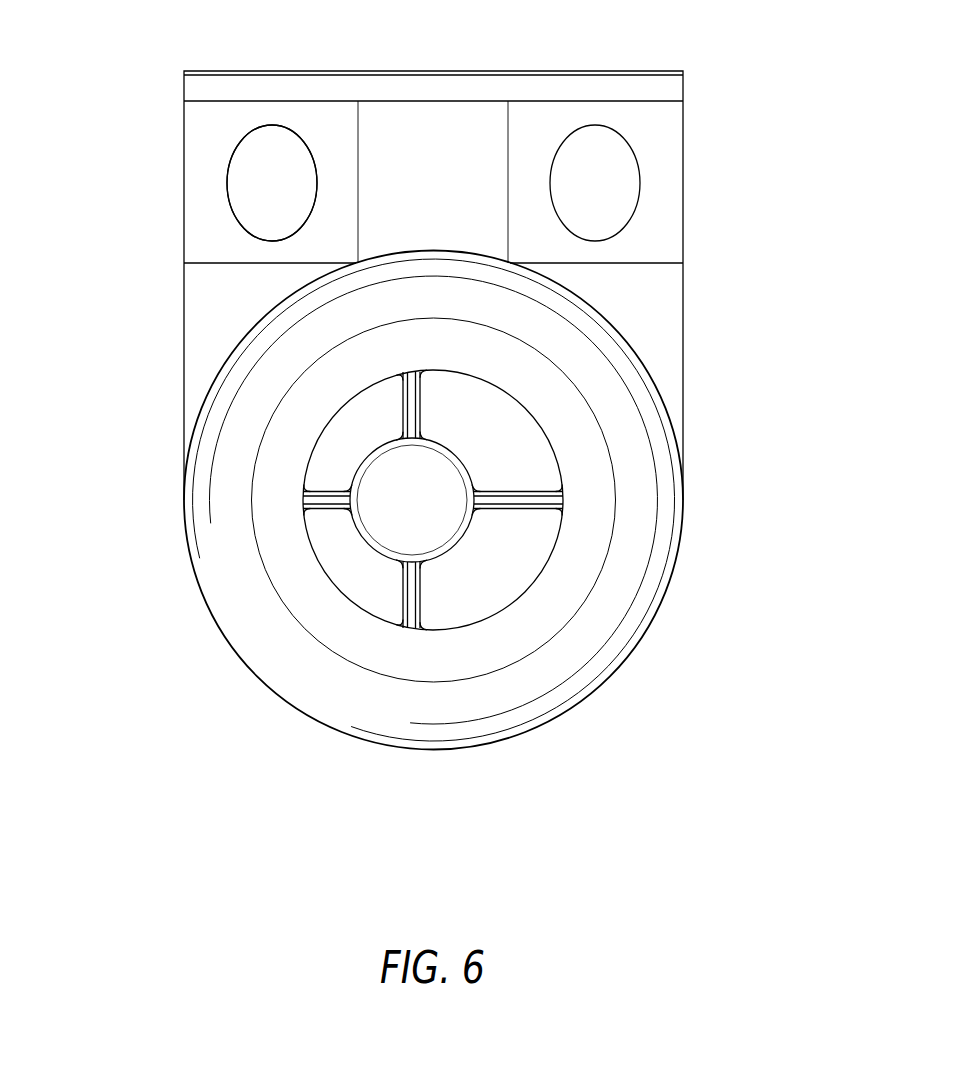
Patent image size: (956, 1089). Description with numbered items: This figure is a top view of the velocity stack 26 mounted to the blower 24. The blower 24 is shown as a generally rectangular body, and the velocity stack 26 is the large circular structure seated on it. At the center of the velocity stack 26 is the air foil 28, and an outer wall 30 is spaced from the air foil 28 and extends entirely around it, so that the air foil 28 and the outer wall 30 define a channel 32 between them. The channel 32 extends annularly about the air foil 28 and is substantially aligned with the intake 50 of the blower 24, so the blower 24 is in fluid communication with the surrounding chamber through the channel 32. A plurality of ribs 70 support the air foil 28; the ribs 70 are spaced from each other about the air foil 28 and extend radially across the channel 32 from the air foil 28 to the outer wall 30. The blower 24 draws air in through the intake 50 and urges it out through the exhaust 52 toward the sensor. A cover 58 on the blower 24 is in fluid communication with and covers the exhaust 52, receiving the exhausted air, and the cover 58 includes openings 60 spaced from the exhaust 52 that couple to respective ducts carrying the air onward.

The blower 24 is at (183, 310).
The velocity stack 26 is at (690, 502).
The air foil 28 is at (360, 547).
The outer wall 30 is at (617, 328).
The channel 32 is at (507, 416).
The intake 50 is at (490, 573).
The exhaust 52 is at (270, 156).
The cover 58 is at (358, 132).
The openings 60 is at (227, 167).
The ribs 70 is at (404, 403).